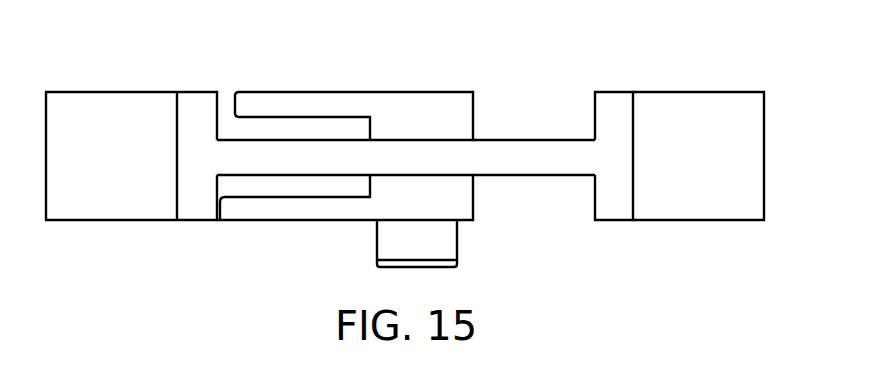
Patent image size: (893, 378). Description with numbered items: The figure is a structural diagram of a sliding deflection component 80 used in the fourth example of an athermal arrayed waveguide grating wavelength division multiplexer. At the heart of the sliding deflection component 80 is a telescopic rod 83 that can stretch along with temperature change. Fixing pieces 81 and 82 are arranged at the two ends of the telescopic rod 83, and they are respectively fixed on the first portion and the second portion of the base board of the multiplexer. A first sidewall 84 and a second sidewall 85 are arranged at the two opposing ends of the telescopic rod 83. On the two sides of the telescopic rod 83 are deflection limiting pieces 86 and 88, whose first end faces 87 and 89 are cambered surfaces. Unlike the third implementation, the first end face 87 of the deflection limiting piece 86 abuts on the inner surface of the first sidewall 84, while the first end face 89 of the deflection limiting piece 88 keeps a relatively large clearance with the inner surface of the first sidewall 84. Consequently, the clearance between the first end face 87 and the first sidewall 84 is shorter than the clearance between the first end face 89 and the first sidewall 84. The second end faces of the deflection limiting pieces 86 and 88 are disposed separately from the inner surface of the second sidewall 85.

The sliding deflection component 80 is at (706, 74).
The fixing piece 81 is at (127, 210).
The fixing piece 82 is at (692, 208).
The telescopic rod 83 is at (498, 150).
The first sidewall 84 is at (200, 103).
The second sidewall 85 is at (614, 103).
The deflection limiting piece 86 is at (383, 210).
The first end face 87 is at (223, 218).
The deflection limiting piece 88 is at (343, 102).
The first end face 89 is at (237, 90).